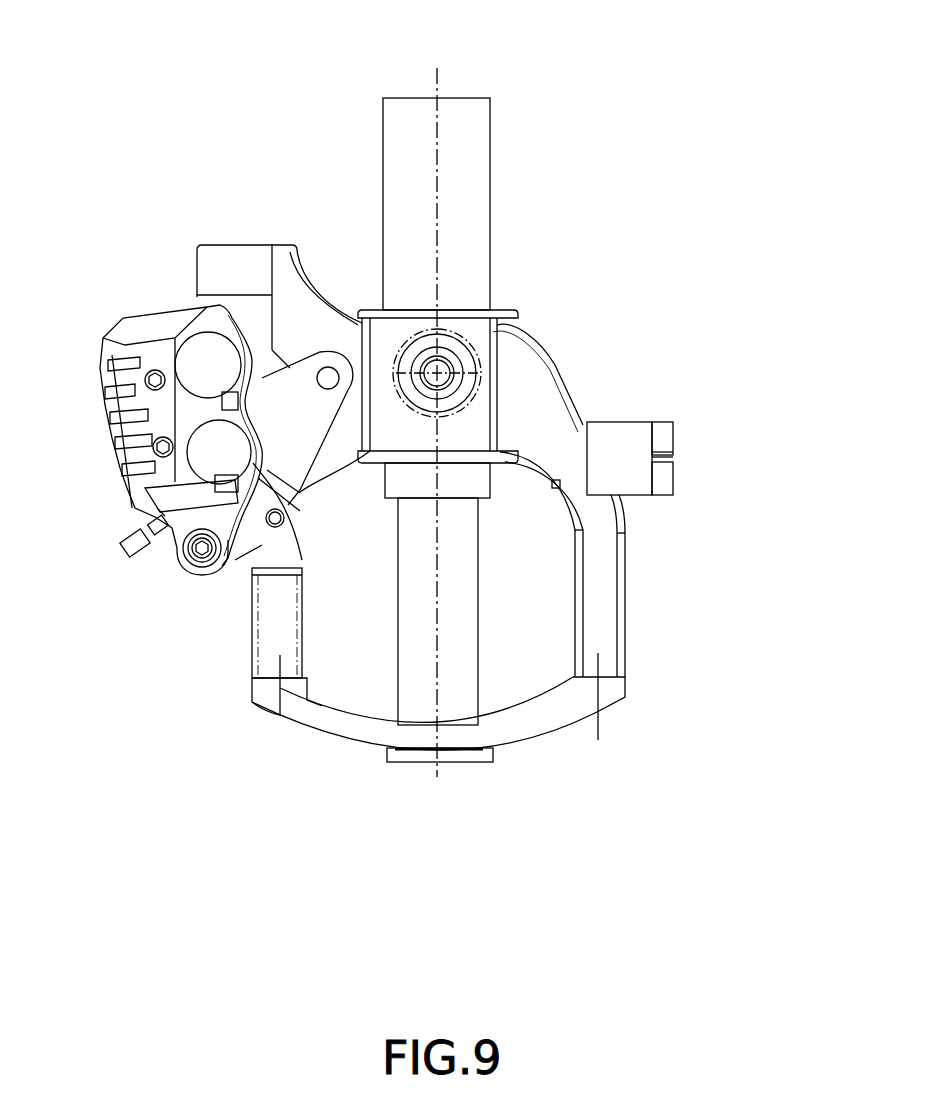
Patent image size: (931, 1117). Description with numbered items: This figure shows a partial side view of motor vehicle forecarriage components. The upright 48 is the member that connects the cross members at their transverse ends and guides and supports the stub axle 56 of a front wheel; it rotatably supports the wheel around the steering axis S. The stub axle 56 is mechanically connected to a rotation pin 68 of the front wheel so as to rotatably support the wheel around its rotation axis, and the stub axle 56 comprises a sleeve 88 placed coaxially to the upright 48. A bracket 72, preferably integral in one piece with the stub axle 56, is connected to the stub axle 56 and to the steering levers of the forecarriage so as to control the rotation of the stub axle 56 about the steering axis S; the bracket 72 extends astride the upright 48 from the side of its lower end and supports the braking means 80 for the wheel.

The upright 48 is at (472, 192).
The stub axle 56 is at (574, 494).
The rotation pin 68 is at (437, 373).
The bracket 72 is at (538, 408).
The braking means 80 is at (165, 328).
The sleeve 88 is at (455, 448).
The steering axis S is at (437, 83).